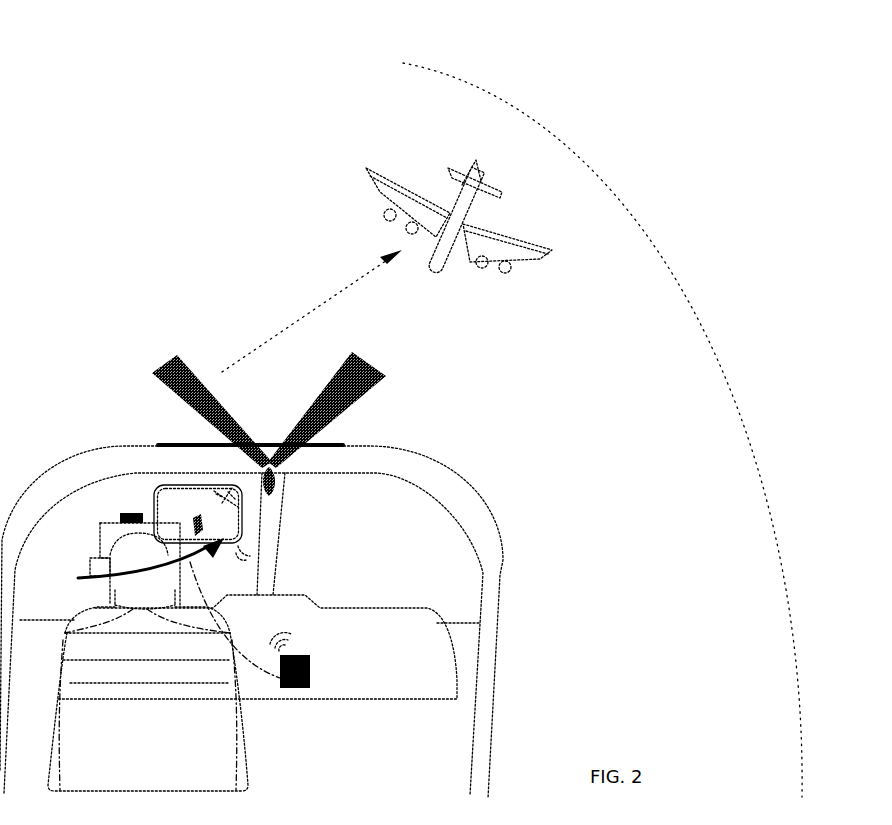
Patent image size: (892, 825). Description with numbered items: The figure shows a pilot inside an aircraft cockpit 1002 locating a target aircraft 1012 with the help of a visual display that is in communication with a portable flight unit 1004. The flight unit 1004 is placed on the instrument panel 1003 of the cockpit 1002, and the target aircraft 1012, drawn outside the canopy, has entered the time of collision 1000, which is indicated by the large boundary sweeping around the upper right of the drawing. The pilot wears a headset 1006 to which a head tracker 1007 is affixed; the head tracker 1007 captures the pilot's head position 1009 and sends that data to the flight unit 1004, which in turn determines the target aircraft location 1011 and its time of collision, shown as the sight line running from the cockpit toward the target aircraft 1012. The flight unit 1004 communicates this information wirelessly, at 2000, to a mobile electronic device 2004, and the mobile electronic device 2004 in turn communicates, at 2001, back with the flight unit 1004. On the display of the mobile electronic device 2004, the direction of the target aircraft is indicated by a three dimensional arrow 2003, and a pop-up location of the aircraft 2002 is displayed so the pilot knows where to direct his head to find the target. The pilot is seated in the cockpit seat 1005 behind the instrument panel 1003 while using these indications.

The time of collision 1000 is at (628, 216).
The cockpit 1002 is at (356, 472).
The instrument panel 1003 is at (390, 608).
The flight unit 1004 is at (306, 654).
The pilot seat 1005 is at (248, 748).
The pilot's headset 1006 is at (90, 558).
The head tracker 1007 is at (130, 510).
The pilot's head position 1009 is at (203, 567).
The target aircraft location 1011 is at (286, 303).
The target aircraft 1012 is at (516, 240).
The wireless communication 2000 is at (281, 636).
The mobile electronic device communication 2001 is at (252, 550).
The pop-up location of the aircraft 2002 is at (248, 488).
The 3 dimensional arrow 2003 is at (190, 526).
The mobile electronic device 2004 is at (176, 462).